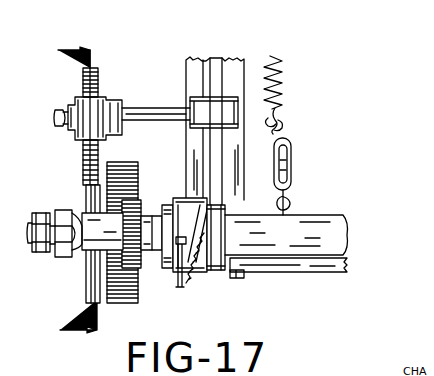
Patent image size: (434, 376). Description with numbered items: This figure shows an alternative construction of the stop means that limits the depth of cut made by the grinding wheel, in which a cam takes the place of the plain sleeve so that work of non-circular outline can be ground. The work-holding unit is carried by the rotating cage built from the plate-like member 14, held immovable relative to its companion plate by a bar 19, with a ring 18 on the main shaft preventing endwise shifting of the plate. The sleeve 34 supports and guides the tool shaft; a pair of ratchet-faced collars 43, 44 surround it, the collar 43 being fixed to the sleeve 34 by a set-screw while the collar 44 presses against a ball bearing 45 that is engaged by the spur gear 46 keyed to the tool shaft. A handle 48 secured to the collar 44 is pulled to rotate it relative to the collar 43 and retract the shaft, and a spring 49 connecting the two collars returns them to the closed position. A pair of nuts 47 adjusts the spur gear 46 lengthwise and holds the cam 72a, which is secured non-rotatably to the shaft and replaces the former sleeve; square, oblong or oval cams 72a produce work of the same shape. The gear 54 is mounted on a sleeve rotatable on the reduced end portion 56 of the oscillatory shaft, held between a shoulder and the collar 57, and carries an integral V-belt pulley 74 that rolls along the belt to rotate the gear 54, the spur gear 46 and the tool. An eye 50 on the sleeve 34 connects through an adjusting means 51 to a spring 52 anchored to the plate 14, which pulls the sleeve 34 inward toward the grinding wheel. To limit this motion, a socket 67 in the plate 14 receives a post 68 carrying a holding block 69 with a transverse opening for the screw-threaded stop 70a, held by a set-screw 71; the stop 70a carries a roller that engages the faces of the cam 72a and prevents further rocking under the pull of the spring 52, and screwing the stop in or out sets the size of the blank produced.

The plate-like member 14 is at (214, 75).
The ring 18 is at (62, 199).
The bar 19 is at (333, 268).
The sleeve 34 is at (345, 212).
The ratchet-faced collar 43 is at (230, 205).
The ratchet-faced collar 44 is at (182, 210).
The ball bearing 45 is at (158, 218).
The spur gear 46 is at (139, 262).
The nuts 47 is at (68, 258).
The handle 48 is at (183, 286).
The spring 49 is at (193, 275).
The eye 50 is at (292, 212).
The adjusting means 51 is at (290, 150).
The spring 52 is at (285, 65).
The gear 54 is at (135, 292).
The reduced end portion 56 is at (30, 242).
The collar 57 is at (42, 213).
The socket 67 is at (203, 118).
The post 68 is at (140, 109).
The holding block 69 is at (107, 95).
The stop 70a is at (98, 68).
The set-screw 71 is at (55, 117).
The cam 72a is at (92, 225).
The V-belt pulley 74 is at (87, 292).